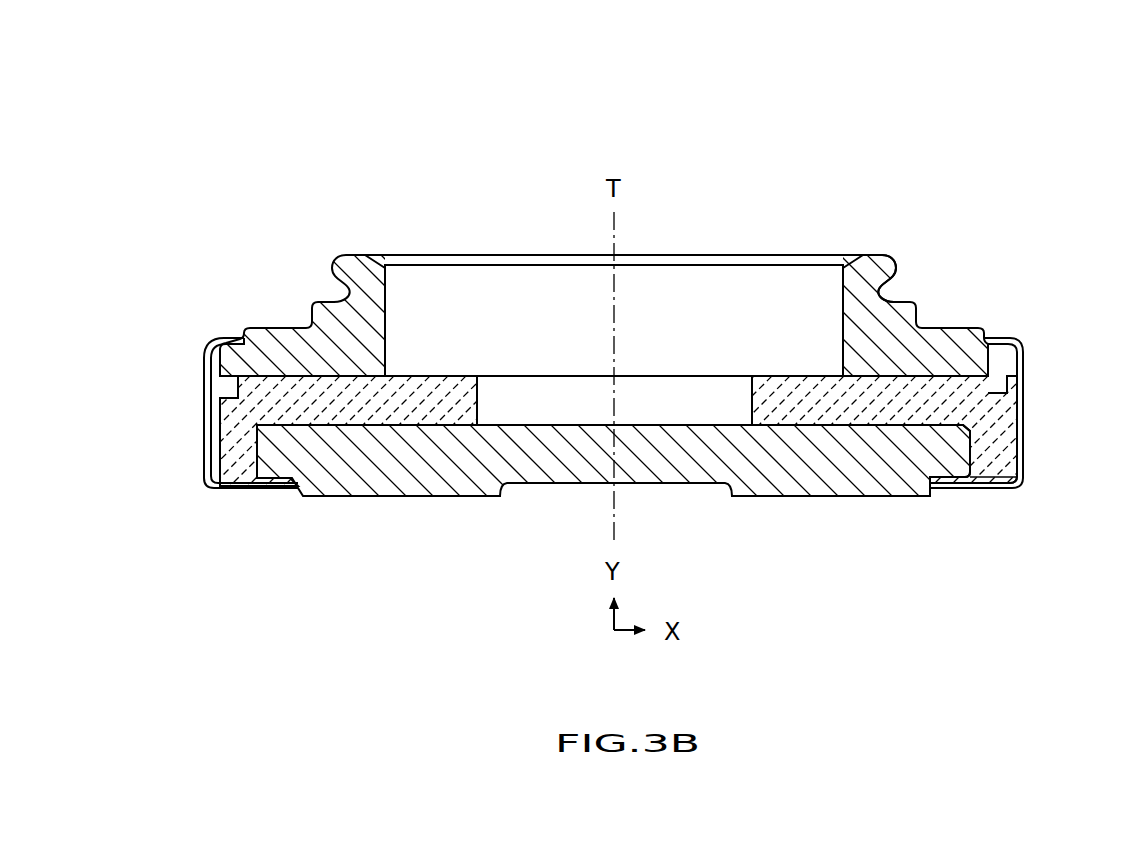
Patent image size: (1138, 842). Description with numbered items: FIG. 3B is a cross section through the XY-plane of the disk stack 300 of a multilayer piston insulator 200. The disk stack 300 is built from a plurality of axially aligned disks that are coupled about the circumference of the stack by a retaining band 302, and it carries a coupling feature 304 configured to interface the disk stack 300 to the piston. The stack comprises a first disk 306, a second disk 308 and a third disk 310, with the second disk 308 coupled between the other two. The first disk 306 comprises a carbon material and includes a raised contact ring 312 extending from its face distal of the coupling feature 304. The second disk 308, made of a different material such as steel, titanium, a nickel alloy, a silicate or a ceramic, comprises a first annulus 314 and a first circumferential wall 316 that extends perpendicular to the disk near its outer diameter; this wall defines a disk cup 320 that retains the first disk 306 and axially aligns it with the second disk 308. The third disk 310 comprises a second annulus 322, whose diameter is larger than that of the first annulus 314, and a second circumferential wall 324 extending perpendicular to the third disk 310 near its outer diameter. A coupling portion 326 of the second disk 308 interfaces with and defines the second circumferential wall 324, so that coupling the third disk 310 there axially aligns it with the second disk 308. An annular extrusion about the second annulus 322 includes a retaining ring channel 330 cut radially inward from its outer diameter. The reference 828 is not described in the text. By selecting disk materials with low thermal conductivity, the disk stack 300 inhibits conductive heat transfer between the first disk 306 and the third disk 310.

The multilayer piston insulator 200 is at (1048, 120).
The disk stack 300 is at (1032, 248).
The coupling feature 304 is at (921, 228).
The third disk 310 is at (911, 362).
The second annulus 322 is at (672, 330).
The bead / protrusion 828 is at (868, 276).
The retaining ring channel 330 is at (889, 293).
The coupling portion 326 is at (969, 385).
The second disk 308 is at (857, 413).
The first annulus 314 is at (647, 399).
The first disk 306 is at (851, 473).
The raised contact ring 312 is at (812, 498).
The retaining band 302 is at (1012, 428).
The disk cup 320 is at (273, 510).
The second circumferential wall 324 is at (1015, 368).
The first circumferential wall 316 is at (997, 468).